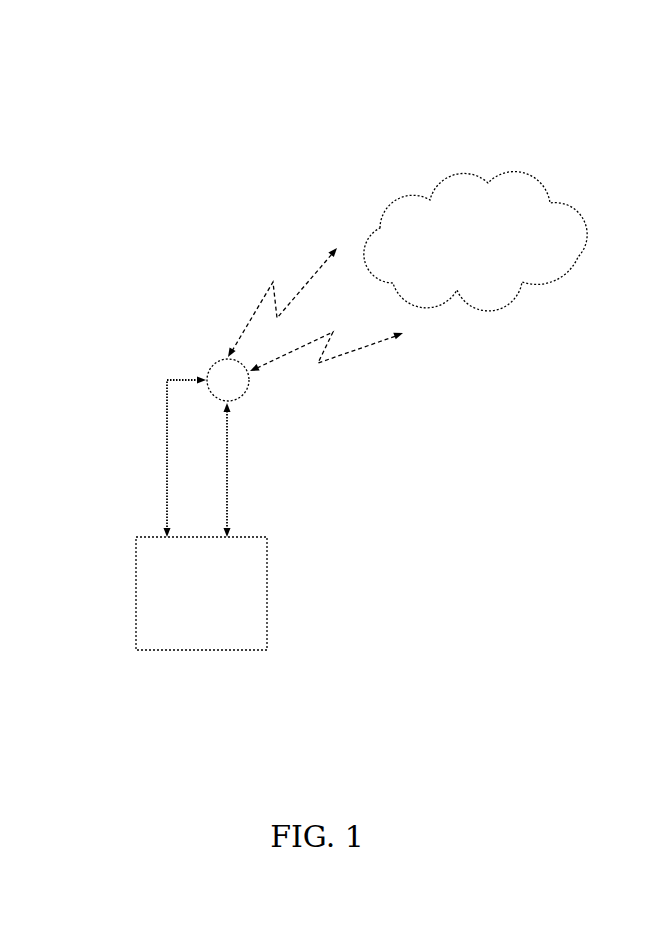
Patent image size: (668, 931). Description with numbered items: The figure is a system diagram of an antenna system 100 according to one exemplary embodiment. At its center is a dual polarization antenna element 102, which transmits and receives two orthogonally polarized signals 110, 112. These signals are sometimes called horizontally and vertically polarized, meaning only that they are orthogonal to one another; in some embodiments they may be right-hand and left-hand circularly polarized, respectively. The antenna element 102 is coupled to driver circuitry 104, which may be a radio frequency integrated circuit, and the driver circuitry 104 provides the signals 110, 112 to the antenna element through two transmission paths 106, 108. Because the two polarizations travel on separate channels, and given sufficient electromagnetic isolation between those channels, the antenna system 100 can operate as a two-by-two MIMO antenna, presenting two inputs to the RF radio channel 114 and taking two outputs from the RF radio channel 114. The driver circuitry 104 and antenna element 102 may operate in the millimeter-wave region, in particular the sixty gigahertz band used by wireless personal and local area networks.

The antenna system 100 is at (310, 22).
The dual polarization antenna element 102 is at (207, 365).
The driver circuitry 104 is at (135, 605).
The transmission path 106 is at (167, 473).
The transmission path 108 is at (227, 473).
The orthogonally polarized signal 110 is at (262, 299).
The orthogonally polarized signal 112 is at (362, 350).
The RF radio channel 114 is at (575, 280).